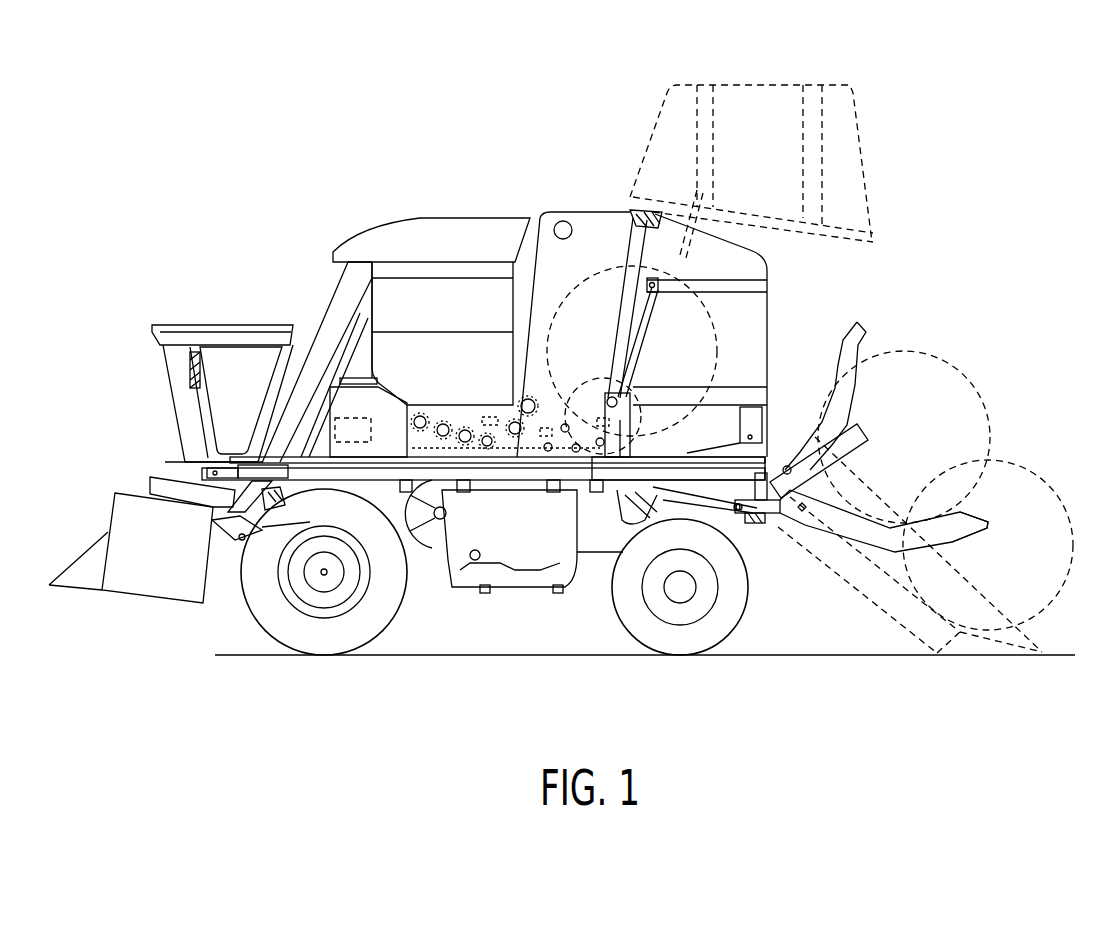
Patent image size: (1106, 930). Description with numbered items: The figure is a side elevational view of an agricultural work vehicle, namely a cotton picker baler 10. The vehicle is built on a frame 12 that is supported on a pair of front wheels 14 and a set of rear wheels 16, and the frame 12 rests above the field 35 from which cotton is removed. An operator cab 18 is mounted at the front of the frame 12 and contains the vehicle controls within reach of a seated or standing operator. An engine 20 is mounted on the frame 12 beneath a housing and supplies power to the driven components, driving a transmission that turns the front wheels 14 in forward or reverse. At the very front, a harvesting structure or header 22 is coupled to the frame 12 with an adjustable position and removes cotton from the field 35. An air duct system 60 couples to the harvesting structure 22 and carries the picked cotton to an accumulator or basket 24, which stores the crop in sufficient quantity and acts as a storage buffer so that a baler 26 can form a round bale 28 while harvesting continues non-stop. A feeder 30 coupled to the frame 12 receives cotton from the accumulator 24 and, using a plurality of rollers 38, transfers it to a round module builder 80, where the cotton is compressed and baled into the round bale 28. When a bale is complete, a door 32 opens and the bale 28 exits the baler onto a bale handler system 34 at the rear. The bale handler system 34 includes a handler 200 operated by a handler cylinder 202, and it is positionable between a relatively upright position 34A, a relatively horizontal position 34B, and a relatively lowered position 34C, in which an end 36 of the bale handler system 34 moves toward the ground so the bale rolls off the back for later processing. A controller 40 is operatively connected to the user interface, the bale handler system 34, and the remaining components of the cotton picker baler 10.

The cotton picker baler 10 is at (225, 175).
The frame 12 is at (731, 468).
The front wheels 14 is at (322, 640).
The rear wheels 16 is at (676, 640).
The operator cab 18 is at (182, 332).
The engine 20 is at (457, 538).
The harvesting structure 22 is at (126, 578).
The accumulator 24 is at (445, 270).
The baler 26 is at (598, 222).
The round bale 28 is at (570, 296).
The feeder 30 is at (486, 372).
The door 32 is at (760, 100).
The bale handler system 34 is at (826, 570).
The relatively upright position 34A is at (852, 322).
The relatively horizontal position 34B is at (960, 540).
The relatively lowered position 34C is at (962, 633).
The field 35 is at (234, 653).
The end of the bale handler system 36 is at (995, 522).
The rollers 38 is at (470, 428).
The controller 40 is at (368, 422).
The air duct system 60 is at (350, 290).
The round module builder 80 is at (557, 182).
The handler 200 is at (803, 452).
The handler cylinder 202 is at (752, 524).